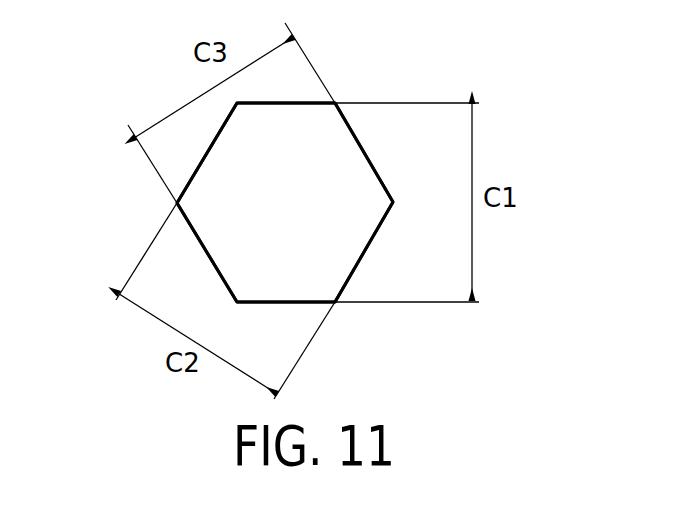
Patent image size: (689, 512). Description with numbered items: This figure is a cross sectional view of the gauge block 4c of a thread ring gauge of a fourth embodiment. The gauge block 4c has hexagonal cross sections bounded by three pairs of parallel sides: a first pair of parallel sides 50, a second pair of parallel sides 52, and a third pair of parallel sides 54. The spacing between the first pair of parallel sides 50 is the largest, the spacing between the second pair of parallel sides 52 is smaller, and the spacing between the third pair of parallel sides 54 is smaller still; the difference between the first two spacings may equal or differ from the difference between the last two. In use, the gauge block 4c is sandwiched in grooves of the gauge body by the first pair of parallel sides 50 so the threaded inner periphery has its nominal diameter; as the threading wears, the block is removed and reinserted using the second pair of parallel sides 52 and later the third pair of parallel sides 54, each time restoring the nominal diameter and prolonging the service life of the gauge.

The gauge block 4c is at (323, 130).
The first pair of parallel sides 50 is at (300, 103).
The second pair of parallel sides 52 is at (203, 152).
The third pair of parallel sides 54 is at (365, 145).